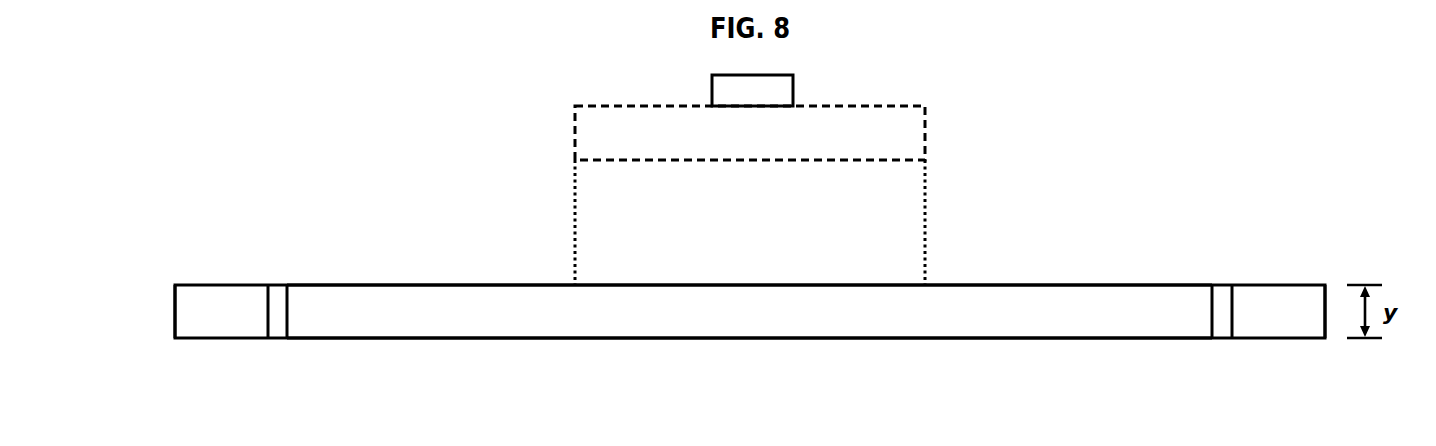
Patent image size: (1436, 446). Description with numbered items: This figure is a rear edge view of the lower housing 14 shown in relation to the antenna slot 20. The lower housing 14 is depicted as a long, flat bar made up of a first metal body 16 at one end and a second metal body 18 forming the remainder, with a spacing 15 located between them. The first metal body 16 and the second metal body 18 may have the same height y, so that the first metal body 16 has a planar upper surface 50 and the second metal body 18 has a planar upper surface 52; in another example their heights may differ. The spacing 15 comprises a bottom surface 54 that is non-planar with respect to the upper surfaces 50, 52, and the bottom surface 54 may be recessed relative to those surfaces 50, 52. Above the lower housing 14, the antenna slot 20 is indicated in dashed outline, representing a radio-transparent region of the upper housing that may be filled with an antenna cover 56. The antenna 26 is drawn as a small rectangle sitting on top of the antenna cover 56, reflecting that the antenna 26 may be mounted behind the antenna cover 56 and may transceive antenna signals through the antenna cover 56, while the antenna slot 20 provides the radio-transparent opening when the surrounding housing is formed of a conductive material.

The lower housing 14 is at (133, 279).
The spacing 15 is at (277, 305).
The first metal body 16 is at (212, 330).
The second metal body 18 is at (762, 323).
The antenna slot 20 is at (938, 130).
The antenna 26 is at (712, 85).
The planar upper surface 50 is at (247, 283).
The planar upper surface 52 is at (975, 283).
The bottom surface 54 is at (282, 337).
The antenna cover 56 is at (866, 127).